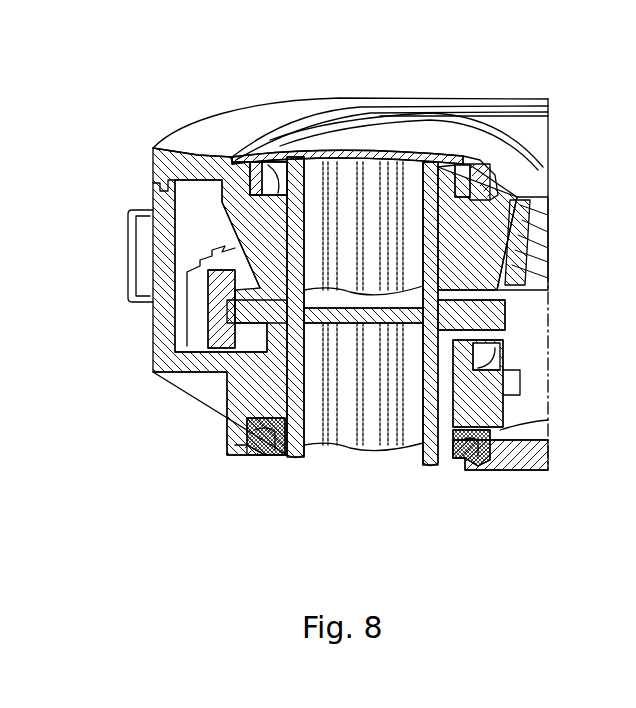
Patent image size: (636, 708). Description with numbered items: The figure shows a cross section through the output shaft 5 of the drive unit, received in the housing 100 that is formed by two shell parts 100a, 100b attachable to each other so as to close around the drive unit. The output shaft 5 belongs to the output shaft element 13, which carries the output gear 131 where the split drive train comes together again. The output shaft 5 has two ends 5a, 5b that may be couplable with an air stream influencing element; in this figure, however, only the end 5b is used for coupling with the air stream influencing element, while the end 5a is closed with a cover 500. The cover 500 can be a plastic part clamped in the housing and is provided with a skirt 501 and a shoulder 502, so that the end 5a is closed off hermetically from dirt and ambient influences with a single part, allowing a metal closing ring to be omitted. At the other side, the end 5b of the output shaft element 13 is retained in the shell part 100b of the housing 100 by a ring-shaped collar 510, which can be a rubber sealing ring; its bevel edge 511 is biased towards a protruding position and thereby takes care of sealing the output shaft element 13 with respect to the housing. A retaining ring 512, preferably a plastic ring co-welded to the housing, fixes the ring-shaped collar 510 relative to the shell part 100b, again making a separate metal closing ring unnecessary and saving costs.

The housing 100 is at (194, 112).
The shell part 100a is at (500, 108).
The shell part 100b is at (140, 255).
The output gear 131 is at (225, 330).
The cover 500 is at (307, 110).
The shoulder 502 is at (507, 162).
The skirt 501 is at (473, 195).
The output shaft 5 is at (362, 277).
The end of the output shaft 5a is at (350, 178).
The end of the output shaft 5b is at (418, 445).
The output shaft element 13 is at (318, 457).
The ring-shaped collar 510 is at (540, 464).
The bevel edge 511 is at (467, 470).
The retaining ring 512 is at (262, 452).